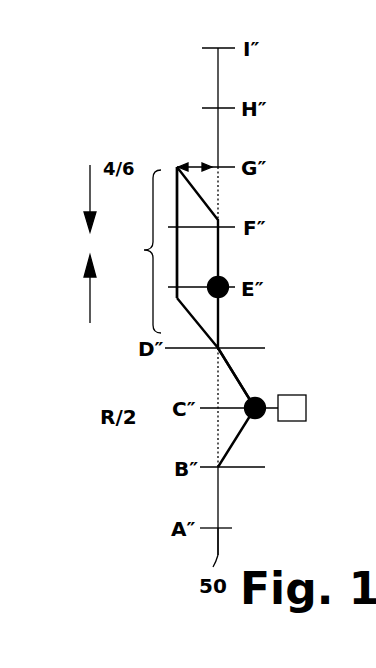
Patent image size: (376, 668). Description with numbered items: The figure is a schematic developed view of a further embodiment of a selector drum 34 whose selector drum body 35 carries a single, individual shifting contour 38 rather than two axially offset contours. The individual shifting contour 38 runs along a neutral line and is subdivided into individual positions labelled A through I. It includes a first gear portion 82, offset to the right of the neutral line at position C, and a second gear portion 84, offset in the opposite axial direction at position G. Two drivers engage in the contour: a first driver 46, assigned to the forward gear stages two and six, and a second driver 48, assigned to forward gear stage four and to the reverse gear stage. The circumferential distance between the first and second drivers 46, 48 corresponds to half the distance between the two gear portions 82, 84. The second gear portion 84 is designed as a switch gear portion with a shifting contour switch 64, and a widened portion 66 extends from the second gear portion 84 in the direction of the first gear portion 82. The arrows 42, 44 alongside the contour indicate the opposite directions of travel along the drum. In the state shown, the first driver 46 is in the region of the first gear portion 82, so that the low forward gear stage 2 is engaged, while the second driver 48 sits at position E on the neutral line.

The selector drum 34 is at (179, 96).
The second gear portion 84 is at (178, 166).
The first direction 42 is at (90, 186).
The second direction 44 is at (90, 296).
The widened portion 66 is at (130, 251).
The shifting contour switch 64 is at (203, 184).
The second selector drum body 35 is at (266, 270).
The second driver 48 is at (226, 296).
The first gear portion 82 is at (263, 395).
The low forward gear stage 2 is at (292, 408).
The first driver 46 is at (265, 420).
The individual shifting contour 38 is at (218, 494).